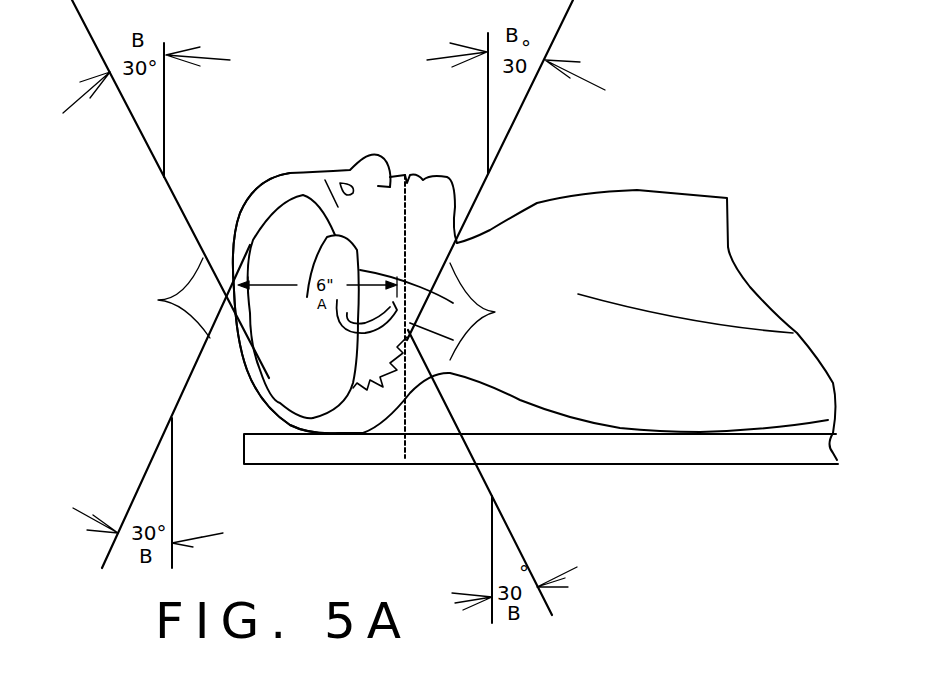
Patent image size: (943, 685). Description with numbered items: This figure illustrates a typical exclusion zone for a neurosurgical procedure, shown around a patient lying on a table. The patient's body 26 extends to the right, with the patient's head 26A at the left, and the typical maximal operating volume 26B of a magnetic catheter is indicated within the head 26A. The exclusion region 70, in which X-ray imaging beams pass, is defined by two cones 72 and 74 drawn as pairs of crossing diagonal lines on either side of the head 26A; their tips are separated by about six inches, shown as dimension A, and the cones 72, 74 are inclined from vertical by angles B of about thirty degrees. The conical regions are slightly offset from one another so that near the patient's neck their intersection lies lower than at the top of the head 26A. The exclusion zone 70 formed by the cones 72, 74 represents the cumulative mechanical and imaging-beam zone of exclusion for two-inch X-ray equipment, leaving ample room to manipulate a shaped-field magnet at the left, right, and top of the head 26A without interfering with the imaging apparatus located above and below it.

The body 26 is at (537, 203).
The patient's head 26A is at (289, 173).
The maximal operating volume 26B is at (310, 197).
The exclusion region 70 is at (330, 309).
The cone 72 is at (523, 107).
The cone 74 is at (139, 128).